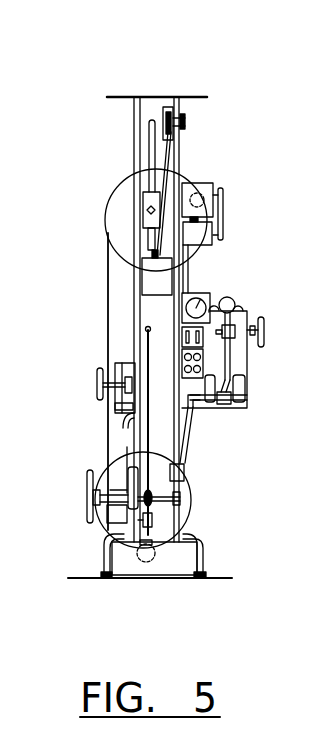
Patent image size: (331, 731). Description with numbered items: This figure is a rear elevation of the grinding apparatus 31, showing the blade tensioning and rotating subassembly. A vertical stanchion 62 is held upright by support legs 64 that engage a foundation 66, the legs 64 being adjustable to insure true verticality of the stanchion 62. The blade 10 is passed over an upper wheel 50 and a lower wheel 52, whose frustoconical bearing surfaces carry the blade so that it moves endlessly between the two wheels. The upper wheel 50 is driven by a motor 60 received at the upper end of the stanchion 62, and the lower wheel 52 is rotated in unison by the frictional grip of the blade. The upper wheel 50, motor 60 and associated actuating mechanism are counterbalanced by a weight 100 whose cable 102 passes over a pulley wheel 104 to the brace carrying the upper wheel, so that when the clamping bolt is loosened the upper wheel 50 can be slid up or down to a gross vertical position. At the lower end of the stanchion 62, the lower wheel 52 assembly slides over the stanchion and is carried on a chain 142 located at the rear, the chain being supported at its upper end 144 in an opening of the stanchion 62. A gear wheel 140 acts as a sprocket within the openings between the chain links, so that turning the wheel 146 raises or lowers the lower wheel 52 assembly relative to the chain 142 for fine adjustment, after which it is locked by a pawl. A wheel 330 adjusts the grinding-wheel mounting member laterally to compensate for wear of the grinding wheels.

The blade 10 is at (104, 299).
The grinding apparatus 31 is at (104, 119).
The upper wheel 50 is at (110, 184).
The lower wheel 52 is at (108, 483).
The motor 60 is at (207, 235).
The vertical stanchion 62 is at (152, 107).
The support legs 64 is at (103, 547).
The foundation 66 is at (68, 578).
The weight 100 is at (162, 273).
The cable 102 is at (180, 163).
The pulley wheel 104 is at (183, 114).
The gear wheel 140 is at (152, 502).
The chain 142 is at (184, 466).
The upper end of chain 144 is at (146, 331).
The wheel 146 is at (87, 493).
The wheel 330 is at (96, 384).